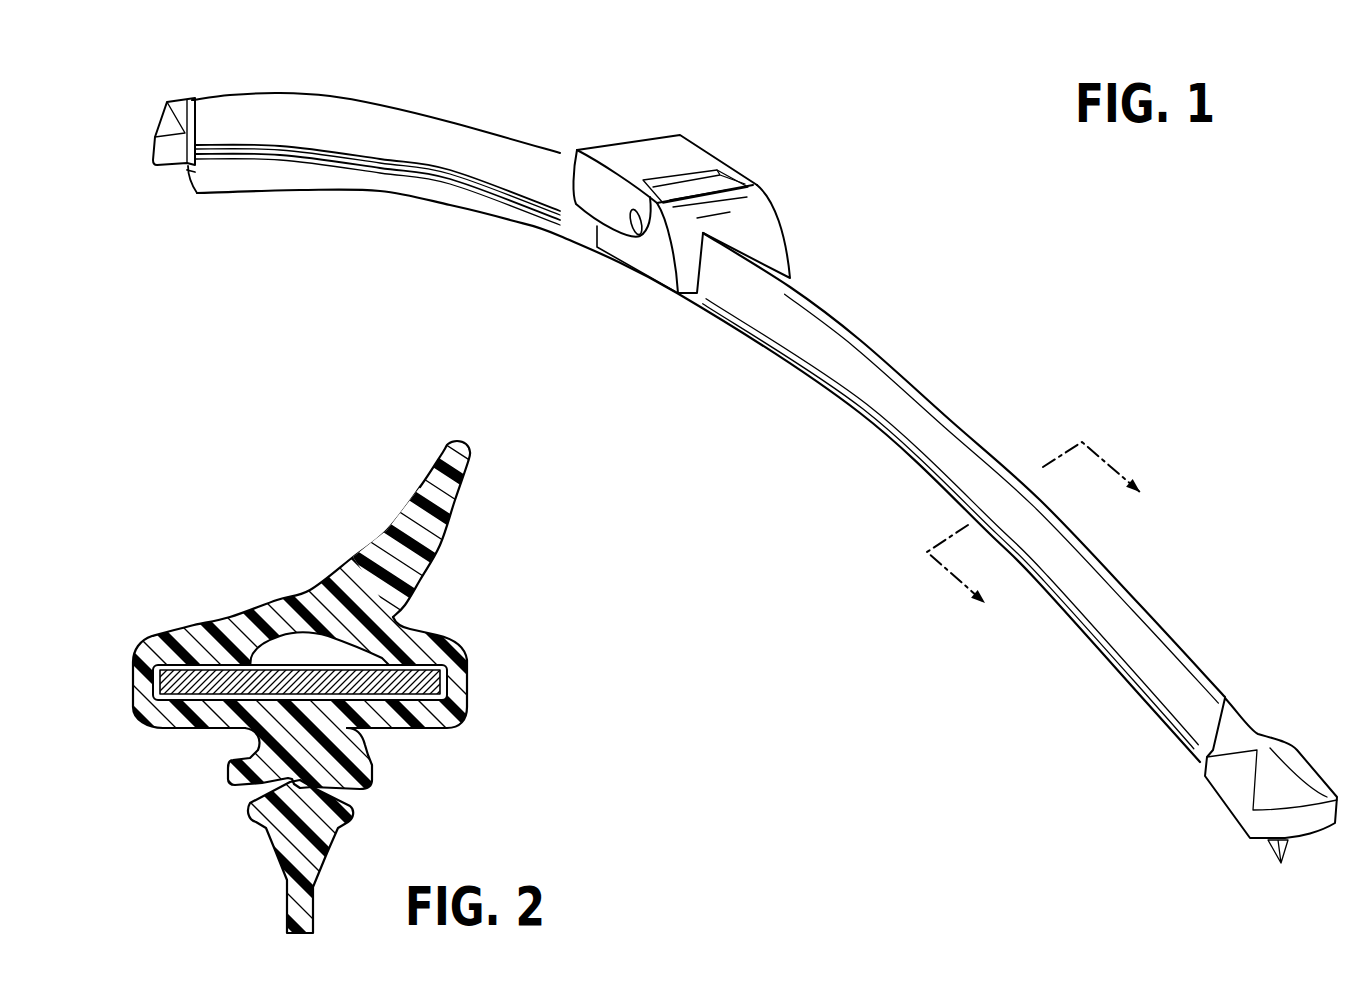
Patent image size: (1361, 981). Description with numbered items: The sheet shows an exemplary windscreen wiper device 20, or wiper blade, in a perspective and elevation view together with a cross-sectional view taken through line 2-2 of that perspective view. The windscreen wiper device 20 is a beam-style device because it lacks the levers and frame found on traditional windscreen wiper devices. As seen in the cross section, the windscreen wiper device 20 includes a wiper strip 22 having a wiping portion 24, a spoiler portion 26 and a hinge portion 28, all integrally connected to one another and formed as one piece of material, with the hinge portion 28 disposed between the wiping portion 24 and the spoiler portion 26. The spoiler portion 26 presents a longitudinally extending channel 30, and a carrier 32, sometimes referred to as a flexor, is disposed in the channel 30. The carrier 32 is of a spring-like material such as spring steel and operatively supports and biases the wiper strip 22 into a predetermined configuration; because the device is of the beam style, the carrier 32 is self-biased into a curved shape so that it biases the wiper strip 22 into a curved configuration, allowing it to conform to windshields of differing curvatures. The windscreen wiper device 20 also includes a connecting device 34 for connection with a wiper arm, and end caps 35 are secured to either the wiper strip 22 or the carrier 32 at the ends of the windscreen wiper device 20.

In FIG. 1, the windscreen wiper device 20 is at (1047, 323).
In FIG. 2, the windscreen wiper device 20 is at (167, 580).
In FIG. 1, the wiper strip 22 is at (483, 215).
In FIG. 2, the wiper strip 22 is at (380, 537).
In FIG. 1, the wiping portion 24 is at (370, 178).
In FIG. 2, the wiping portion 24 is at (277, 860).
In FIG. 1, the spoiler portion 26 is at (382, 128).
In FIG. 2, the spoiler portion 26 is at (330, 590).
In FIG. 2, the hinge portion 28 is at (313, 783).
In FIG. 2, the channel 30 is at (250, 656).
In FIG. 2, the carrier 32 is at (380, 677).
In FIG. 1, the connecting device 34 is at (752, 228).
In FIG. 1, the end caps 35 is at (177, 117).
In FIG. 1, the line 2- 2 is at (1033, 518).